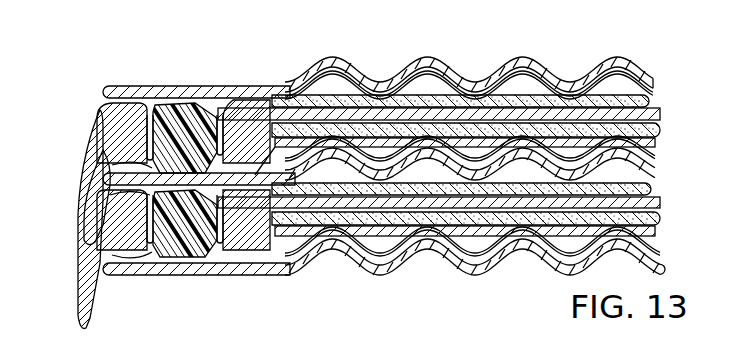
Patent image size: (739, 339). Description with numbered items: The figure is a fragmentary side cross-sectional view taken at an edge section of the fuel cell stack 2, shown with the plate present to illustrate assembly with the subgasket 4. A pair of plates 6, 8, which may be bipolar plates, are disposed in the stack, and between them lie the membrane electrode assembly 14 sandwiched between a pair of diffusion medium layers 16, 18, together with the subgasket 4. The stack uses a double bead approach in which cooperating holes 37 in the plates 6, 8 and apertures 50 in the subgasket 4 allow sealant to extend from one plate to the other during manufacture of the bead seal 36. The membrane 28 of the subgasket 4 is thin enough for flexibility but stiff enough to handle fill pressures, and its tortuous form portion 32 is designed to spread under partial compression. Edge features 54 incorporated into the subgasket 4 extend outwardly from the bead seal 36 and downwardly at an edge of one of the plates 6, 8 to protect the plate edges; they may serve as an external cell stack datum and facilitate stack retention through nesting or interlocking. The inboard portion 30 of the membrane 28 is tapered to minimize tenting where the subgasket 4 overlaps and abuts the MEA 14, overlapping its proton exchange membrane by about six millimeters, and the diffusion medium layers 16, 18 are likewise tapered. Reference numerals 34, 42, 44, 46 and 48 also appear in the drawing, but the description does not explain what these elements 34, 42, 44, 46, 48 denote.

The fuel cell stack 2 is at (483, 43).
The subgasket 4 is at (98, 133).
The plate 6 is at (657, 80).
The plate 8 is at (653, 145).
The membrane electrode assembly 14 is at (657, 115).
The diffusion medium layer 16 is at (652, 105).
The diffusion medium layer 18 is at (662, 133).
The membrane 28 is at (583, 118).
The inboard portion 30 is at (391, 108).
The tortuous form portion 32 is at (192, 118).
The flange lobe 34 is at (133, 163).
The bead seal 36 is at (150, 128).
The cooperating holes 37 is at (150, 190).
The slot 42 is at (147, 145).
The central brace block 44 is at (164, 144).
The right support block 46 is at (233, 95).
The brace bar 48 is at (190, 104).
The apertures 50 is at (157, 90).
The edge features 54 is at (90, 147).